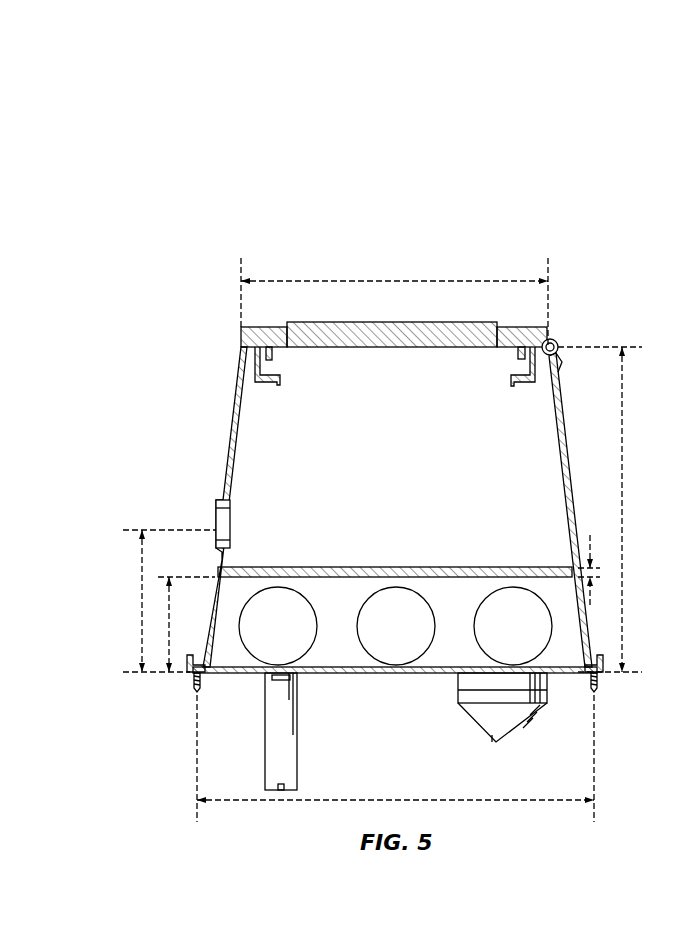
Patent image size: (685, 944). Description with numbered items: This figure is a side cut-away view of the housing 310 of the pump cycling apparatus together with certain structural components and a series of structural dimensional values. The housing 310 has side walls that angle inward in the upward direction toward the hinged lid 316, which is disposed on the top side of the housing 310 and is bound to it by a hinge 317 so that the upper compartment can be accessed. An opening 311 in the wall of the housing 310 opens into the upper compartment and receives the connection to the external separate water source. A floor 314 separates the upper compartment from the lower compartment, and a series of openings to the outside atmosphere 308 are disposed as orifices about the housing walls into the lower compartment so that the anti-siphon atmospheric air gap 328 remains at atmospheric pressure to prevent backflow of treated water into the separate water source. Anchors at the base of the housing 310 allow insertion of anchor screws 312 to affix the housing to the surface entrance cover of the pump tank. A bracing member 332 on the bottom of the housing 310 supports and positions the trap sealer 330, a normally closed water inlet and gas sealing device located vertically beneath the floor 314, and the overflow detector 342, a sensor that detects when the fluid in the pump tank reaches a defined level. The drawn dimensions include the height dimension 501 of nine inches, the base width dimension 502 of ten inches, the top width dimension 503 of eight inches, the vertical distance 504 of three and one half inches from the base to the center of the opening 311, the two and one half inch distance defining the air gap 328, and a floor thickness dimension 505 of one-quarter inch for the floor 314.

The housing 310 is at (226, 214).
The hinged lid 316 is at (260, 328).
The hinge 317 is at (555, 338).
The opening 311 is at (217, 517).
The floor 314 is at (372, 567).
The openings to the outside atmosphere 308 is at (296, 638).
The bracing member 332 is at (413, 675).
The anchor screws 312 is at (193, 684).
The overflow detector 342 is at (297, 732).
The trap sealer 330 is at (523, 724).
The top width dimension 503 is at (395, 281).
The height dimension 501 is at (622, 400).
The floor thickness dimension 505 is at (590, 600).
The vertical distance 504 is at (142, 558).
The anti-siphon atmospheric air gap 328 is at (168, 625).
The base width dimension 502 is at (395, 800).